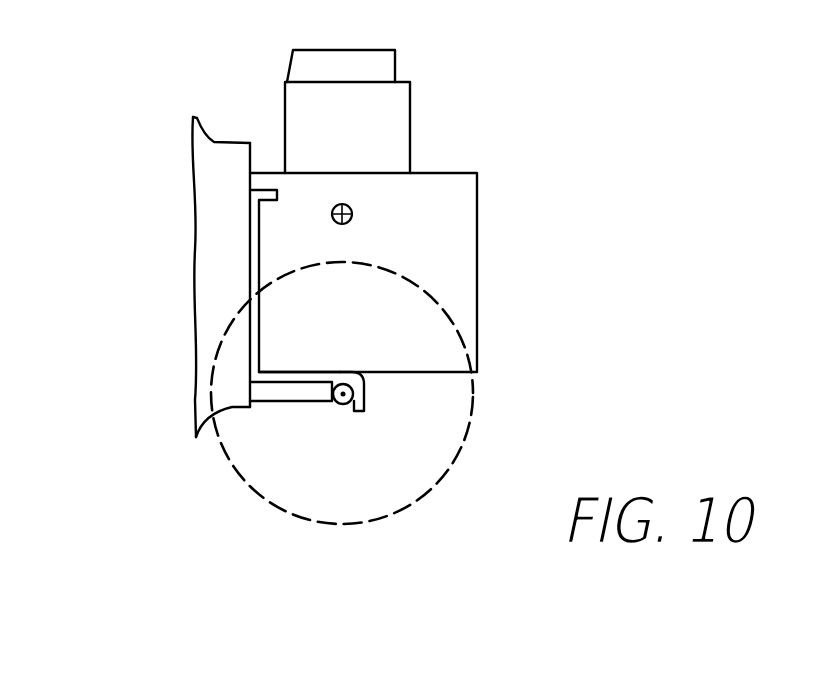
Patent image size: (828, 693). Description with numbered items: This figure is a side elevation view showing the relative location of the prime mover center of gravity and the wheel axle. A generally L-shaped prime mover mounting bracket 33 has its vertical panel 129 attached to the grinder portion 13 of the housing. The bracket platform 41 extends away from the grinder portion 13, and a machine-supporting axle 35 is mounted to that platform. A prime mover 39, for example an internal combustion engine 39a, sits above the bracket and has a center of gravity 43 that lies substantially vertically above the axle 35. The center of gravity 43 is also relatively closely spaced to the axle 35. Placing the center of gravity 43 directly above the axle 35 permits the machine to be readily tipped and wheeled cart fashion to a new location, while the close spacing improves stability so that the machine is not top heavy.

The grinder portion 13 is at (215, 143).
The prime mover mounting bracket 33 is at (226, 200).
The vertical panel 129 is at (260, 268).
The prime mover 39 is at (440, 98).
The internal combustion engine 39a is at (468, 180).
The center of gravity 43 is at (353, 221).
The bracket platform 41 is at (292, 373).
The machine-supporting axle 35 is at (343, 405).